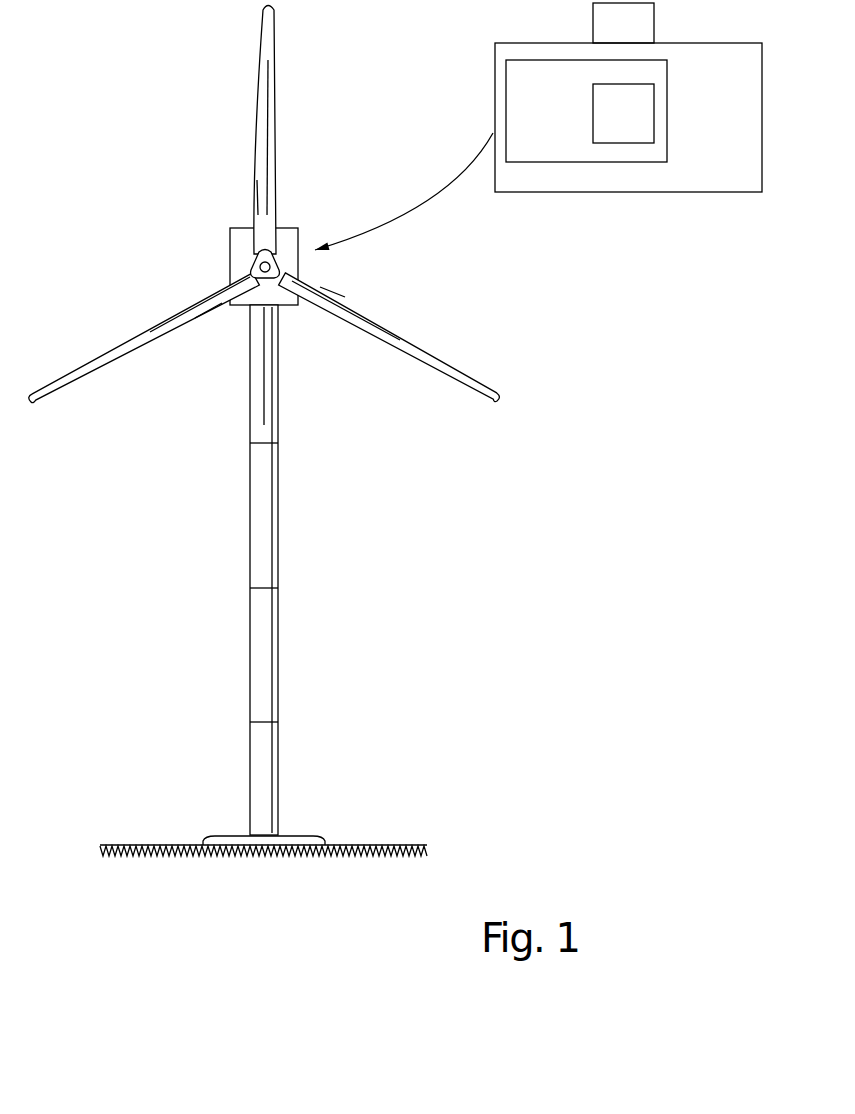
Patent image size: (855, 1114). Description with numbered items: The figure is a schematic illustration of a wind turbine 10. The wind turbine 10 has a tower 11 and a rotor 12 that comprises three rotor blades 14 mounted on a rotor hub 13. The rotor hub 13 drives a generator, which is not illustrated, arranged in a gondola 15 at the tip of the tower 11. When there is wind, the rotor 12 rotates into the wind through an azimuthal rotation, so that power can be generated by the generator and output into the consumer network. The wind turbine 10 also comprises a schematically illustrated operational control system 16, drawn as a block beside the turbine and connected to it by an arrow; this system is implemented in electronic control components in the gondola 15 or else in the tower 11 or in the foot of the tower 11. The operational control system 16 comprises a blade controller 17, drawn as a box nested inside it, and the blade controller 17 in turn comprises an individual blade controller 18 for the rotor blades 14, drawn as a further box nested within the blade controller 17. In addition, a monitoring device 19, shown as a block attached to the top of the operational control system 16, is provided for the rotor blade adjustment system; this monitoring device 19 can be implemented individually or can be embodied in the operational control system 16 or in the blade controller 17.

The wind turbine 10 is at (145, 503).
The tower 11 is at (262, 518).
The rotor 12 is at (136, 322).
The rotor hub 13 is at (255, 262).
The rotor blades 14 is at (262, 150).
The gondola 15 is at (238, 229).
The operational control system 16 is at (722, 127).
The blade controller 17 is at (559, 127).
The individual blade controller 18 is at (638, 127).
The monitoring device 19 is at (638, 35).